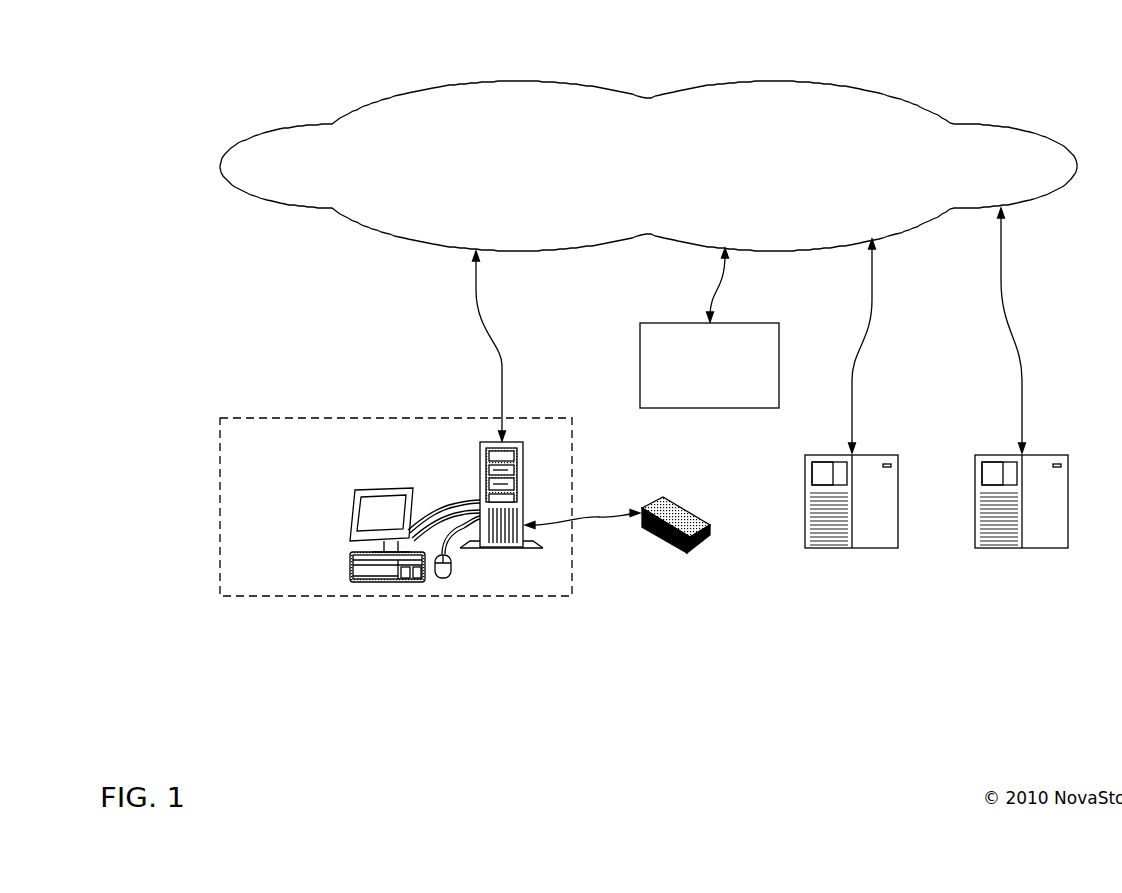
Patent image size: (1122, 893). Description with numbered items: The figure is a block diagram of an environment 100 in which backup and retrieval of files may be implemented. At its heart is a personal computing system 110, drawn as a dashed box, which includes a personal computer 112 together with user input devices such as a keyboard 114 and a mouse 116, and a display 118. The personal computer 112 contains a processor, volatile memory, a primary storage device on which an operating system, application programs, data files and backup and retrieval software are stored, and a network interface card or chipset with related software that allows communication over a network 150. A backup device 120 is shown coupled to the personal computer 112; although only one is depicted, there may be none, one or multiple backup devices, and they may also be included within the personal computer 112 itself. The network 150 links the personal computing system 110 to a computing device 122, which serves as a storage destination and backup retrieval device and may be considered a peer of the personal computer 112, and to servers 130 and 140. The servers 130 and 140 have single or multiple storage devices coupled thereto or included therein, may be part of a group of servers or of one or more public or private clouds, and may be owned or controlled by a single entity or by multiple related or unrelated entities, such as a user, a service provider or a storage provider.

The environment 100 is at (185, 70).
The personal computing system 110 is at (372, 418).
The personal computer 112 is at (480, 470).
The keyboard 114 is at (349, 567).
The mouse 116 is at (452, 565).
The display 118 is at (354, 520).
The backup device 120 is at (663, 551).
The computing device 122 is at (709, 365).
The server 130 is at (851, 527).
The server 140 is at (1021, 527).
The network 150 is at (648, 166).